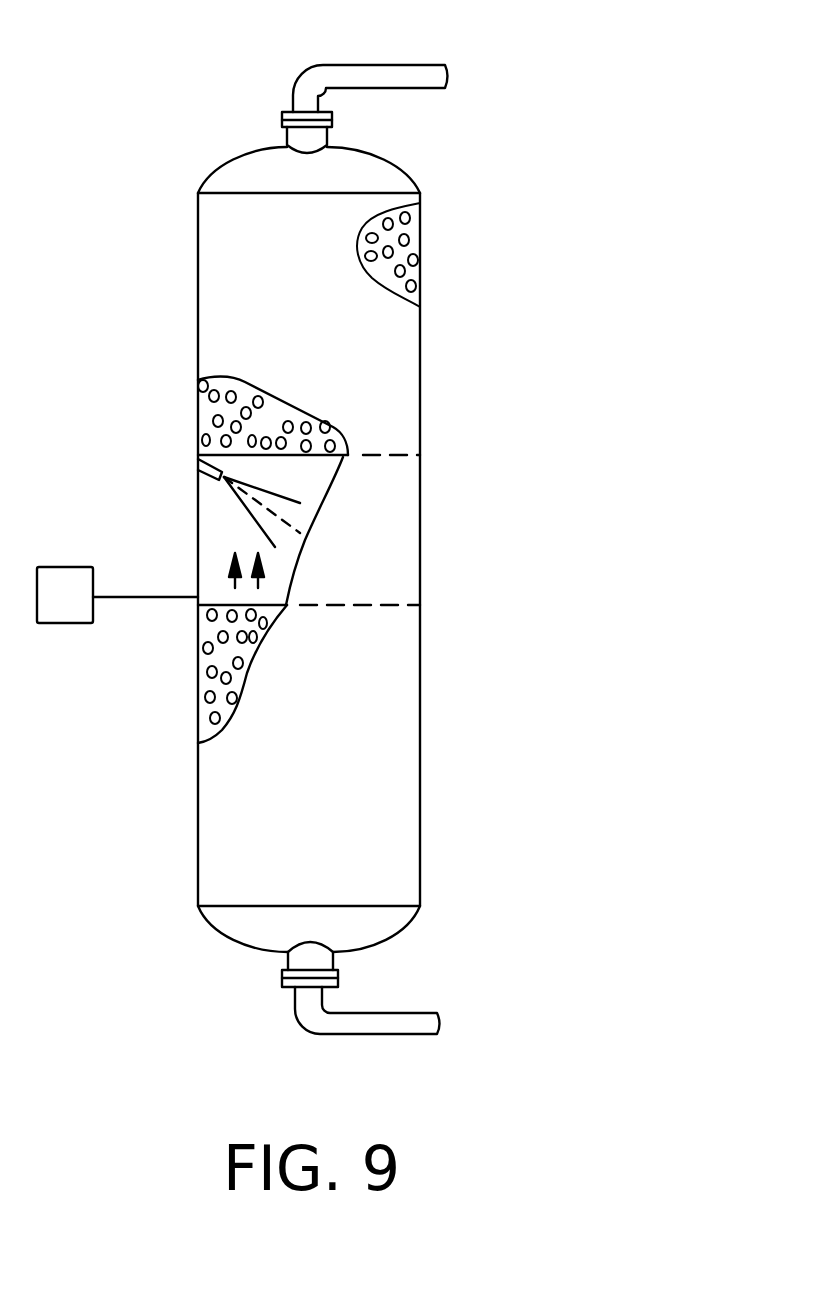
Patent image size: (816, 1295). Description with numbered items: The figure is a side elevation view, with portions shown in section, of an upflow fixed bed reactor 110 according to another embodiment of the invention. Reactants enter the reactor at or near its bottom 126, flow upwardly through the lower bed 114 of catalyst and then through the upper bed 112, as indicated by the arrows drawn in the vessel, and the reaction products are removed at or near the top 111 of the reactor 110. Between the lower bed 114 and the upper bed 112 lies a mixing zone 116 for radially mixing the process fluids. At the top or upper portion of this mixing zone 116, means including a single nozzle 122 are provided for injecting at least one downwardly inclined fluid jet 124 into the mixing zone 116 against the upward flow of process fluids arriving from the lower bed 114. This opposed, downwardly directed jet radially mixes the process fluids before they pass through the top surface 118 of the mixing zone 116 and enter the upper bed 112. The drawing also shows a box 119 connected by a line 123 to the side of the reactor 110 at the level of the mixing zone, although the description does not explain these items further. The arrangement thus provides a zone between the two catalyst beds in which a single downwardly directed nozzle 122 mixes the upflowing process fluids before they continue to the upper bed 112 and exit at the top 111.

The reactor 110 is at (442, 544).
The top of the reactor 111 is at (410, 65).
The upper bed 112 is at (260, 417).
The lower bed 114 is at (223, 683).
The mixing zone 116 is at (218, 510).
The top surface of the mixing zone 118 is at (332, 457).
The controller 119 is at (82, 603).
The nozzle 122 is at (198, 473).
The control line 123 is at (198, 580).
The downwardly inclined fluid jet 124 is at (253, 521).
The bottom of the reactor 126 is at (393, 1013).